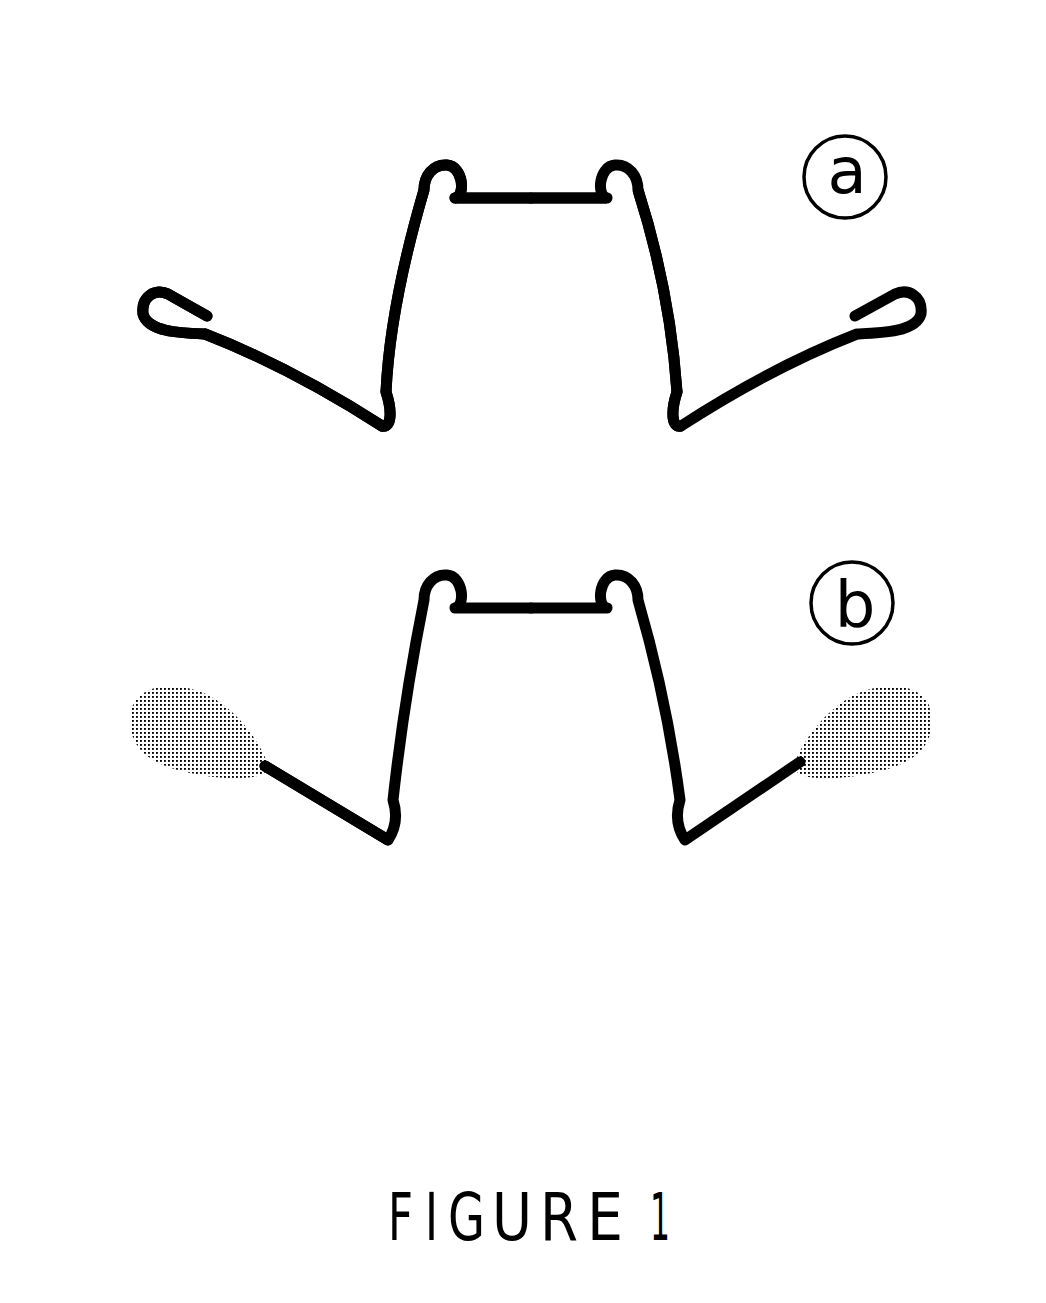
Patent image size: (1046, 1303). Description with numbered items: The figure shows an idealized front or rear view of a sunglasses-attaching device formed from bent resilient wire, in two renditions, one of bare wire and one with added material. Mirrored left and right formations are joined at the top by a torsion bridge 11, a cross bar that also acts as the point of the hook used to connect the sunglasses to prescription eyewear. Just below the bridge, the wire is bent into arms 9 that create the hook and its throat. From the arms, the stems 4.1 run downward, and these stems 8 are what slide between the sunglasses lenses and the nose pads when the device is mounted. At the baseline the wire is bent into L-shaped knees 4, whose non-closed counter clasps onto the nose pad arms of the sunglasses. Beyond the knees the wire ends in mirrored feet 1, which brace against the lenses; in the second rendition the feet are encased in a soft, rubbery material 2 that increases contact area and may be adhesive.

The feet 1 is at (162, 337).
The encasing material 2 is at (163, 768).
The knees 4 is at (397, 422).
The stems 4.1 is at (398, 342).
The stems 8 is at (307, 780).
The arms 9 is at (433, 167).
The torsion bridge 11 is at (531, 185).